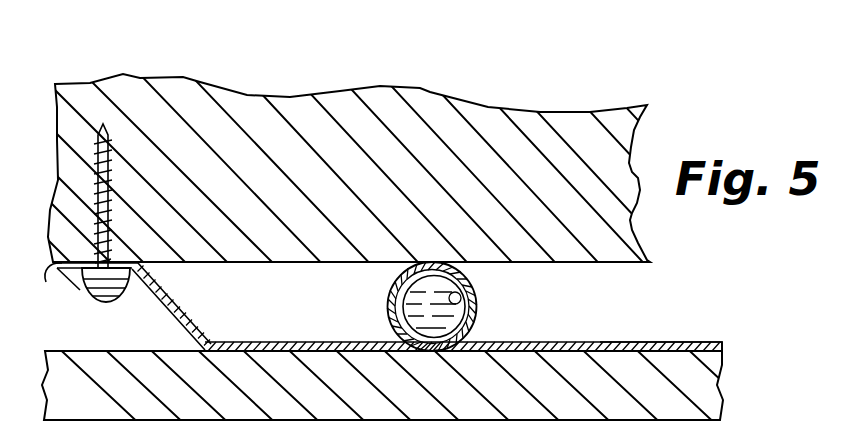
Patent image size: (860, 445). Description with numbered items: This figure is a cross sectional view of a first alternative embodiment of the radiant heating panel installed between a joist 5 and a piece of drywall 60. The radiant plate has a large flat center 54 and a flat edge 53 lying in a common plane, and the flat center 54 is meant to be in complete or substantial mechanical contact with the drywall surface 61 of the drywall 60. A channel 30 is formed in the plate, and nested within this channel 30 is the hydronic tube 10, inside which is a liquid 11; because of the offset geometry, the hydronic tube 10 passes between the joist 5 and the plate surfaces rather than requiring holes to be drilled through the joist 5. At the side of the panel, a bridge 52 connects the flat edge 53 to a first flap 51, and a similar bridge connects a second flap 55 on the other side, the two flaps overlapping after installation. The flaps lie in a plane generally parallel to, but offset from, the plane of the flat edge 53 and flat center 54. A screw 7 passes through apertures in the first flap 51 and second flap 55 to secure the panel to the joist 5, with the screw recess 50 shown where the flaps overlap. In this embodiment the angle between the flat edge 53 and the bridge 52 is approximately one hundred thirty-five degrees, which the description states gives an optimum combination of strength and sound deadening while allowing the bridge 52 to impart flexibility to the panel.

The joist 5 is at (297, 95).
The screw 7 is at (92, 192).
The hydronic tube 10 is at (385, 310).
The liquid 11 is at (392, 296).
The channel 30 is at (468, 306).
The screw recess 50 is at (95, 302).
The first flap 51 is at (72, 284).
The bridge 52 is at (178, 312).
The flat edge 53 is at (260, 344).
The flat center 54 is at (628, 345).
The second flap 55 is at (50, 266).
The drywall 60 is at (456, 394).
The drywall surface 61 is at (723, 356).